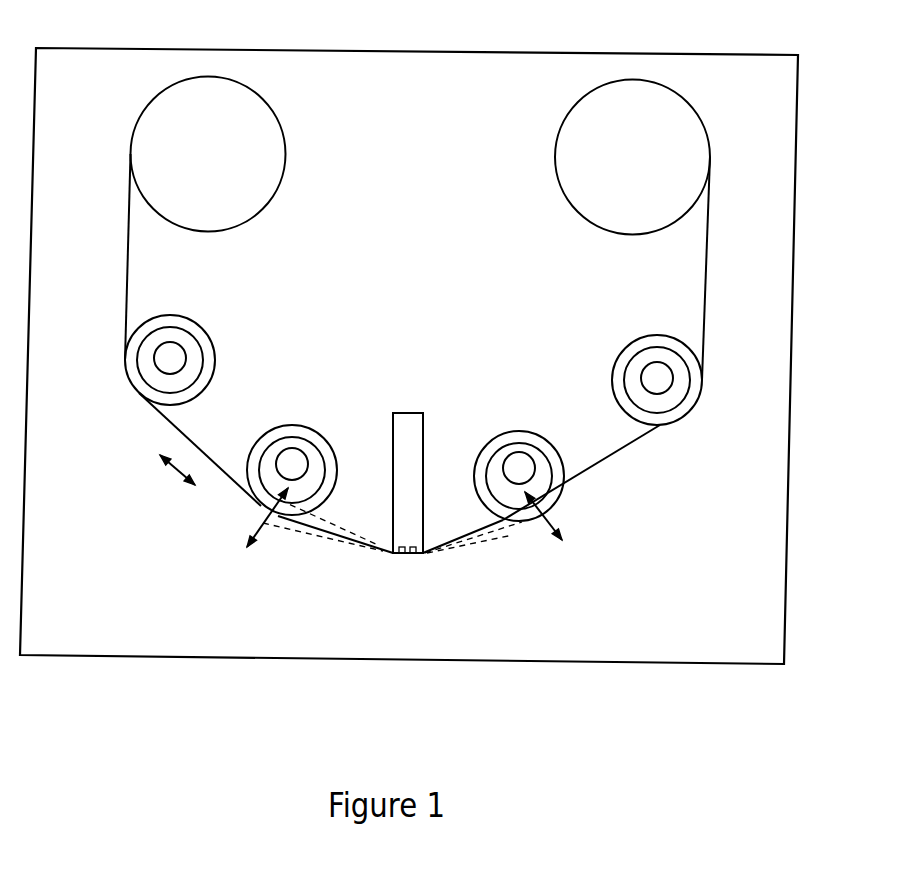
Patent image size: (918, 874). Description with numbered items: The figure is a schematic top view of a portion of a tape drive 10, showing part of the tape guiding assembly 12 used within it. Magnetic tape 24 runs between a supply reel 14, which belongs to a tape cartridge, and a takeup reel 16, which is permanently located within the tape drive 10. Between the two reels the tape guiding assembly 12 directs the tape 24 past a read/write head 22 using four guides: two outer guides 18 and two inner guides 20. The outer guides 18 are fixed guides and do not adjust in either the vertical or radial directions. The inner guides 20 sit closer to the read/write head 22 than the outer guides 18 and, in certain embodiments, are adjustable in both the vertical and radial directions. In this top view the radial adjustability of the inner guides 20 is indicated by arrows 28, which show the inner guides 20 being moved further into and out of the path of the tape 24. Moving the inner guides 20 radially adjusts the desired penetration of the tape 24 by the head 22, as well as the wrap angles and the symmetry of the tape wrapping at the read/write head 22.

The tape drive 10 is at (712, 55).
The tape guiding assembly 12 is at (573, 570).
The supply reel 14 is at (287, 155).
The takeup reel 16 is at (555, 152).
The outer guides 18 is at (136, 385).
The inner guides 20 is at (258, 507).
The read/write head 22 is at (418, 413).
The magnetic tape 24 is at (170, 422).
The arrows 28 is at (270, 530).